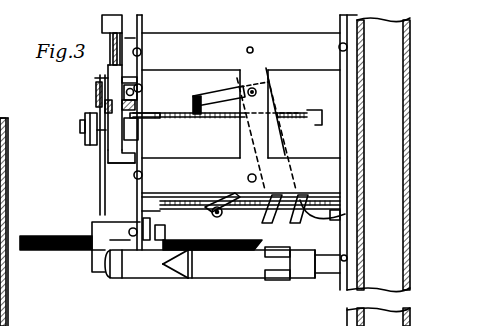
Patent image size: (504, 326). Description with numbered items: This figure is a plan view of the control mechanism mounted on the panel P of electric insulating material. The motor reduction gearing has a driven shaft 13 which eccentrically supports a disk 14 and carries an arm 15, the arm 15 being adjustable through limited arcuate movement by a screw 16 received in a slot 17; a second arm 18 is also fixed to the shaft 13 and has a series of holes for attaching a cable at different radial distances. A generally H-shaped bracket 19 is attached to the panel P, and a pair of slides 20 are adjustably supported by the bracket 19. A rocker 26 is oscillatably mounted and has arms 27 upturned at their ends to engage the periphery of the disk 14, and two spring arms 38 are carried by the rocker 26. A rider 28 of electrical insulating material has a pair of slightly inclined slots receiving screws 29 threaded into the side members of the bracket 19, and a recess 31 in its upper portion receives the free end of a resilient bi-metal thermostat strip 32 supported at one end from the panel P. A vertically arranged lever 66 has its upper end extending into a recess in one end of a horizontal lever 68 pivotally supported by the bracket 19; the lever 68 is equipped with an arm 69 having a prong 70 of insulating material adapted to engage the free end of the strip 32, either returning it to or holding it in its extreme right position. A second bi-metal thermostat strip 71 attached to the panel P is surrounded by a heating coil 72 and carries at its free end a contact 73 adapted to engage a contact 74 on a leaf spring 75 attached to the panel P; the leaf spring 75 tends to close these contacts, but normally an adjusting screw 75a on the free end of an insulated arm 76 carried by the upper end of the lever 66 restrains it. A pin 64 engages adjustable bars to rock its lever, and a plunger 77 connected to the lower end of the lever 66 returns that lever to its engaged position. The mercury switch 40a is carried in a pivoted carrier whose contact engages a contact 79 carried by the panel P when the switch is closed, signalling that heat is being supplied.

The panel P is at (353, 260).
The H-shaped bracket 19 is at (348, 48).
The screws 29 is at (143, 45).
The arms 27 is at (104, 20).
The rocker 26 is at (122, 50).
The slot 17 is at (130, 78).
The recess 31 is at (140, 95).
The disk 14 is at (110, 60).
The spring arms 38 is at (108, 78).
The screw 16 is at (97, 88).
The driven shaft 13 is at (84, 118).
The second arm 18 is at (94, 134).
The arm 15 is at (100, 188).
The bi-metal thermostat strip 32 is at (150, 122).
The rider 28 is at (135, 156).
The prong 70 is at (200, 98).
The arm 69 is at (230, 88).
The horizontal lever 68 is at (280, 140).
The contact 74 is at (246, 196).
The insulated arm 76 is at (212, 214).
The leaf spring 75 is at (258, 194).
The second bi-metal thermostat strip 71 is at (300, 207).
The heating coil 72 is at (345, 215).
The vertically arranged lever 66 is at (270, 232).
The slides 20 is at (150, 212).
The pin 64 is at (130, 238).
The plunger 77 is at (62, 256).
The contact 73 is at (212, 256).
The adjusting screw 75a is at (178, 280).
The mercury switch 40a is at (245, 270).
The contact 79 is at (338, 256).